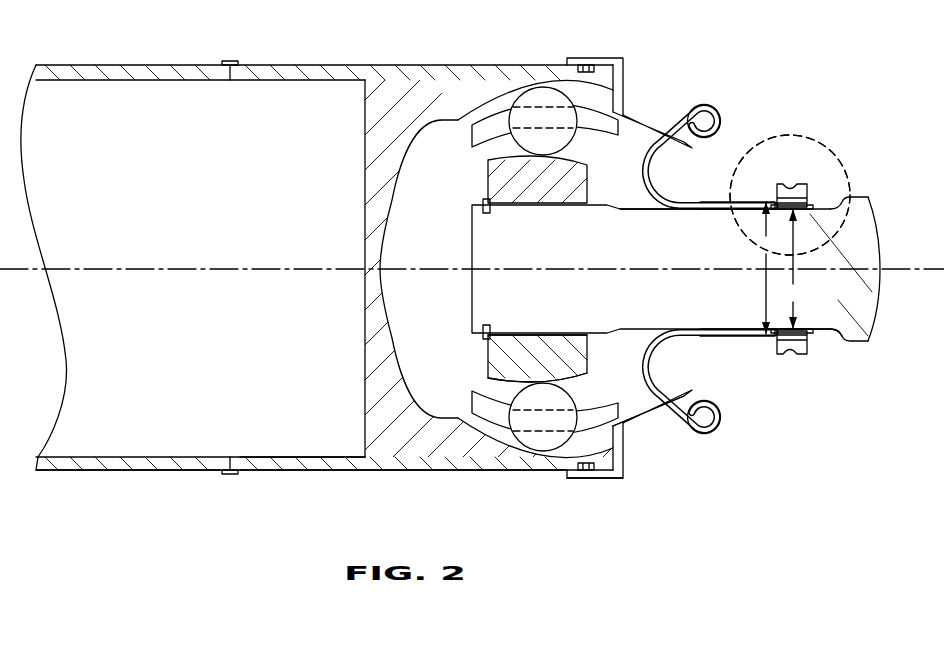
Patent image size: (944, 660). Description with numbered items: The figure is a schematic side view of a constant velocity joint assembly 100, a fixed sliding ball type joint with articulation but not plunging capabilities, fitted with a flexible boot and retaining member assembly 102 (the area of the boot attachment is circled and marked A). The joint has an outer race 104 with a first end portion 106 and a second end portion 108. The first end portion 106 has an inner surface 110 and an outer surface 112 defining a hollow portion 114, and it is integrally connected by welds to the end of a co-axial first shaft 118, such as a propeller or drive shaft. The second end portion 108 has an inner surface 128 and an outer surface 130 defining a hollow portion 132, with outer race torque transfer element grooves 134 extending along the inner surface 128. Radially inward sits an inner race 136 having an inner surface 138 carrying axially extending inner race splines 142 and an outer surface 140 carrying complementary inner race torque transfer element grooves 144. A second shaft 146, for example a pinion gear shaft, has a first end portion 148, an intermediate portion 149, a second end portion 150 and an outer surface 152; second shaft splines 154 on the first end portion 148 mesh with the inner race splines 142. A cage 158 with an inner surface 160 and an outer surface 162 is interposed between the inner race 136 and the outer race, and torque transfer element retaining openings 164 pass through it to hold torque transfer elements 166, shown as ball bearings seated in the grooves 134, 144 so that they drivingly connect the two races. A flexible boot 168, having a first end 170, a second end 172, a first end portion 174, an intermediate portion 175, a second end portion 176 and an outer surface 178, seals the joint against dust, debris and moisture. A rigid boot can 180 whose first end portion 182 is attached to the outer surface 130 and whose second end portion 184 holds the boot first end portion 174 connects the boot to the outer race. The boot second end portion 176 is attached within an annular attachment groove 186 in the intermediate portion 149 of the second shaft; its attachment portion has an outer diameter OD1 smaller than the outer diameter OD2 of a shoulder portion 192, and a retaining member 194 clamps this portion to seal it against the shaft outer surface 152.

The constant velocity joint assembly 100 is at (224, 572).
The flexible boot and retaining member assembly 102 is at (806, 125).
The outer race 104 is at (390, 75).
The first end portion 106 is at (287, 471).
The second end portion 108 is at (500, 469).
The inner surface 110 is at (246, 456).
The outer surface 112 is at (274, 470).
The hollow portion 114 is at (326, 438).
The first shaft 118 is at (125, 471).
The inner surface 128 is at (437, 423).
The outer surface 130 is at (410, 469).
The hollow portion 132 is at (447, 396).
The outer race torque transfer element grooves 134 is at (478, 424).
The inner race 136 is at (523, 368).
The inner surface 138 is at (567, 329).
The outer surface 140 is at (490, 412).
The inner race splines 142 is at (521, 329).
The inner race torque transfer element grooves 144 is at (585, 387).
The second shaft 146 is at (610, 263).
The first end portion 148 is at (587, 209).
The intermediate portion 149 is at (690, 212).
The second end portion 150 is at (873, 350).
The outer surface 152 is at (840, 340).
The second shaft splines 154 is at (521, 209).
The cage 158 is at (543, 420).
The inner surface 160 is at (627, 470).
The outer surface 162 is at (586, 470).
The torque transfer element retaining openings 164 is at (626, 452).
The torque transfer elements 166 is at (540, 97).
The flexible boot 168 is at (684, 200).
The first end 170 is at (710, 112).
The second end 172 is at (838, 212).
The first end portion 174 is at (690, 146).
The intermediate portion 175 is at (658, 358).
The second end portion 176 is at (768, 200).
The outer surface 178 is at (742, 338).
The boot can 180 is at (650, 413).
The first end portion 182 is at (608, 479).
The second end portion 184 is at (720, 412).
The annular attachment groove 186 is at (818, 324).
The shoulder portion 192 is at (773, 348).
The retaining member 194 is at (804, 186).
The detail region A is at (852, 172).
The outer diameter of the substantially cylindrical attachment portion OD1 is at (795, 269).
The outer diameter of the shoulder portion OD2 is at (760, 268).